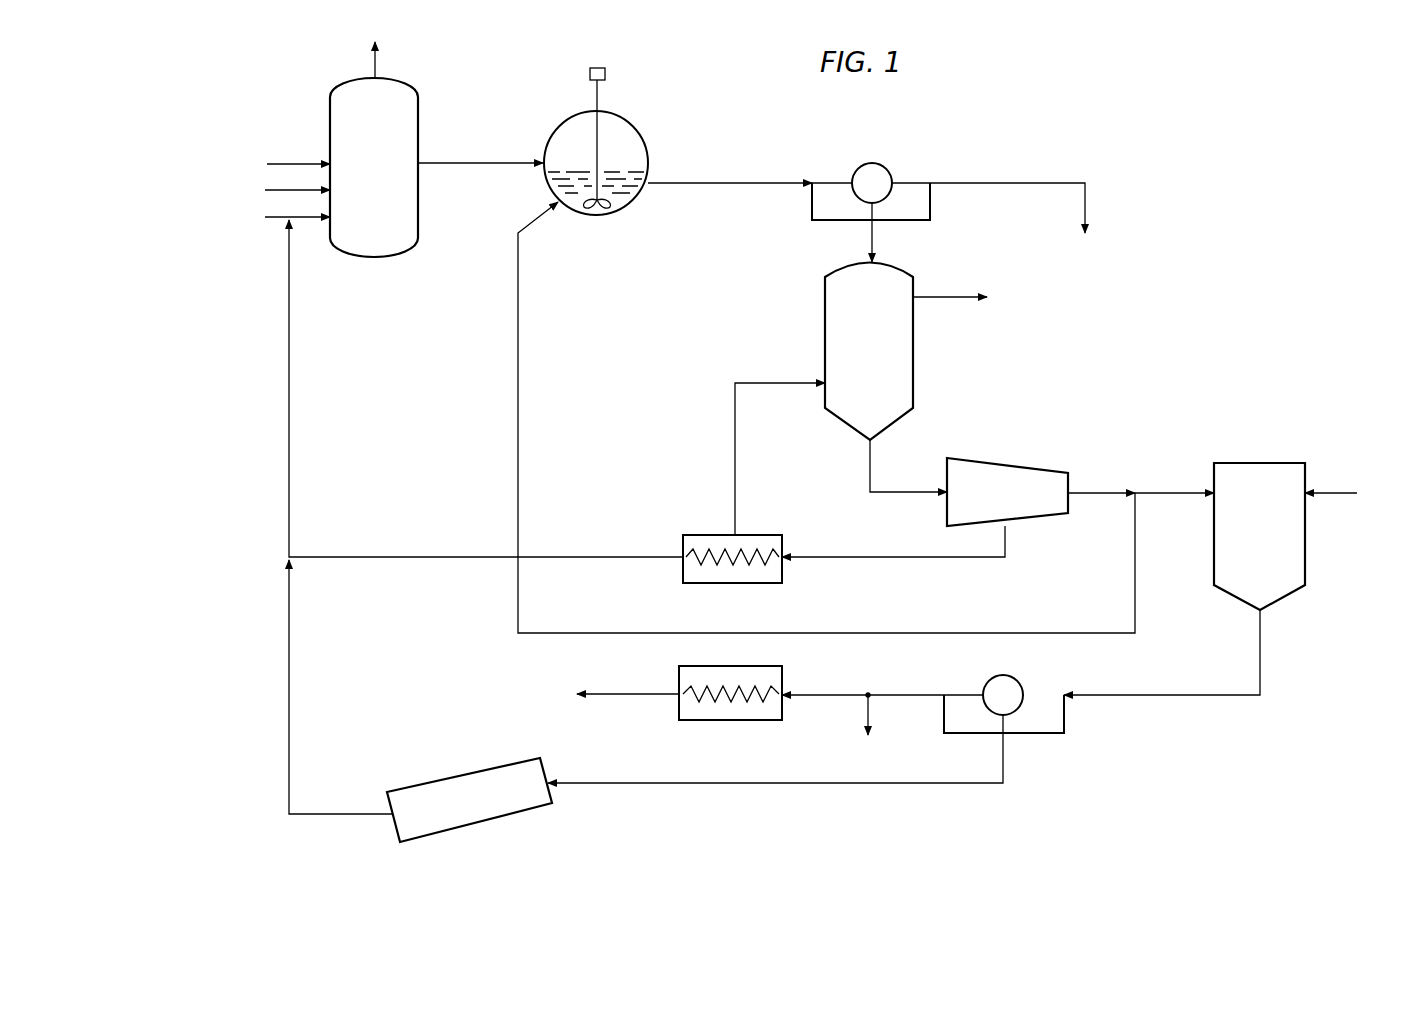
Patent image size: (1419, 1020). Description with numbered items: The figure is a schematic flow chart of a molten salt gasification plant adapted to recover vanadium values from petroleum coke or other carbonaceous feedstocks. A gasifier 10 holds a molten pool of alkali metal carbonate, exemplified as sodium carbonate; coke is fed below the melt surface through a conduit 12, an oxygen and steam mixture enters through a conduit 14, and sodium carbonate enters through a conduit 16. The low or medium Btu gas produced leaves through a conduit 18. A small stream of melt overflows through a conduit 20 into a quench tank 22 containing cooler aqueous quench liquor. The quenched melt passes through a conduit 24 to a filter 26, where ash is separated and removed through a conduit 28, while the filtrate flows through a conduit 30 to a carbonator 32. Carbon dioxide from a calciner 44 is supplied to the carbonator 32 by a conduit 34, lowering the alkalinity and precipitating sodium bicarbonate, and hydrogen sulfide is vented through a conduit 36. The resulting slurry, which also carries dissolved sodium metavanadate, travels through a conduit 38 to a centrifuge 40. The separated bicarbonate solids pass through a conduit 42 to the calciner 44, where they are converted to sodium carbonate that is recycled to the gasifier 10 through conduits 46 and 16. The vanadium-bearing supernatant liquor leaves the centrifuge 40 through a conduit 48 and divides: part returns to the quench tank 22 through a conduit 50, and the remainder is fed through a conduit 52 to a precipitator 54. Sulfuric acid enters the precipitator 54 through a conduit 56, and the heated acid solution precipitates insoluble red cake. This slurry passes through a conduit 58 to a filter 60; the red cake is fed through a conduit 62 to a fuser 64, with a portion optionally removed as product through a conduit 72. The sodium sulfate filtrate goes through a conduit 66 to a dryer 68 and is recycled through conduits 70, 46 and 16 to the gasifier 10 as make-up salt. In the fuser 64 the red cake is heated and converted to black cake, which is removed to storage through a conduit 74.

The gasifier 10 is at (382, 179).
The conduit 12 is at (272, 163).
The conduit 14 is at (294, 189).
The conduit 16 is at (282, 218).
The conduit 18 is at (380, 68).
The conduit 20 is at (473, 160).
The quench tank 22 is at (627, 122).
The conduit 24 is at (717, 183).
The filter 26 is at (810, 208).
The conduit 28 is at (1027, 182).
The conduit 30 is at (870, 243).
The carbonator 32 is at (878, 366).
The conduit 34 is at (759, 381).
The conduit 36 is at (948, 296).
The conduit 38 is at (868, 470).
The centrifuge 40 is at (1008, 506).
The conduit 42 is at (886, 558).
The calciner 44 is at (683, 575).
The conduit 46 is at (372, 557).
The conduit 48 is at (1108, 493).
The conduit 50 is at (1041, 633).
The conduit 52 is at (1165, 493).
The precipitator 54 is at (1268, 549).
The conduit 56 is at (1346, 497).
The conduit 58 is at (1260, 658).
The filter 60 is at (1066, 718).
The conduit 62 is at (906, 694).
The fuser 64 is at (783, 720).
The conduit 66 is at (1005, 780).
The dryer 68 is at (476, 814).
The conduit 70 is at (289, 683).
The conduit 72 is at (870, 718).
The conduit 74 is at (642, 690).